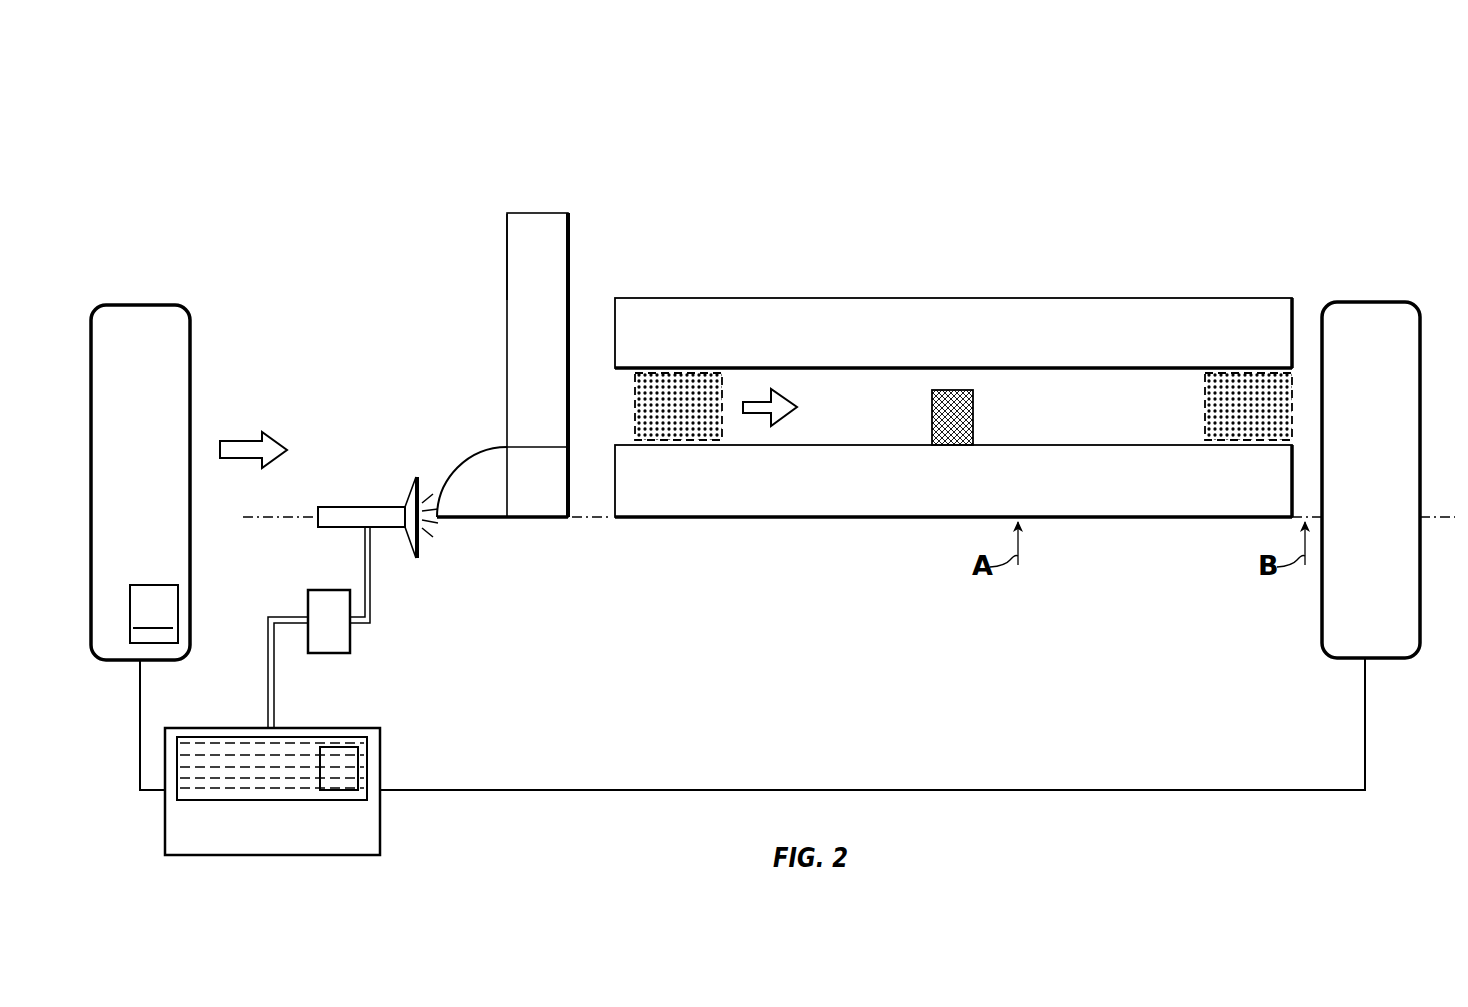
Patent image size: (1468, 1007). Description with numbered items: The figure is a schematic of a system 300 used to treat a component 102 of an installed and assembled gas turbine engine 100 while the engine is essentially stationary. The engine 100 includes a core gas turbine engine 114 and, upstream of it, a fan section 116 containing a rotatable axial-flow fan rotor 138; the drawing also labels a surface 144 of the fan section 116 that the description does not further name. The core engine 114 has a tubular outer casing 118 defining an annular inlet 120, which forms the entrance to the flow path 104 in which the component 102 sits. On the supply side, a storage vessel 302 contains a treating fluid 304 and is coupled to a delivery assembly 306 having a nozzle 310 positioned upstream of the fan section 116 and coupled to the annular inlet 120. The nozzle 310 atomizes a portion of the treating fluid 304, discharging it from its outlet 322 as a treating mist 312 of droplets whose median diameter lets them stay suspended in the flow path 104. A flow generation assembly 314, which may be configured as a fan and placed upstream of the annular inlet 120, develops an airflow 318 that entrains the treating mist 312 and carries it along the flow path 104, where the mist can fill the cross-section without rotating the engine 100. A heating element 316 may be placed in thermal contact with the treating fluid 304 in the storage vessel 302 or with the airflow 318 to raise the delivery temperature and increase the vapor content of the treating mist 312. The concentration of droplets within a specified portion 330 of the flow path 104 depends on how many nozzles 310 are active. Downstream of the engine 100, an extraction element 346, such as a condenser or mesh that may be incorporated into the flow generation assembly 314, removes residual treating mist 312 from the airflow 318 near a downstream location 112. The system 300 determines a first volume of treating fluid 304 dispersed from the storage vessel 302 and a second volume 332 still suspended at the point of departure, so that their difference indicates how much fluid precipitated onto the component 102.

The gas turbine engine 100 is at (645, 83).
The system 300 is at (178, 172).
The core gas turbine engine 114 is at (1247, 152).
The fan section 116 is at (525, 188).
The wall surface 144 is at (520, 232).
The fan rotor 138 is at (543, 505).
The annular inlet 120 is at (610, 387).
The outer casing 118 is at (942, 300).
The treating mist 312 is at (676, 398).
The airflow 318 is at (246, 446).
The delivery assembly 306 is at (343, 500).
The nozzle 310 is at (420, 497).
The outlet 322 is at (410, 520).
The heating element 316 is at (340, 640).
The flow generation assembly 314 is at (138, 315).
The extraction element 346 is at (1373, 315).
The outlet 112 is at (1435, 515).
The component 102 is at (963, 420).
The flow path 104 is at (913, 435).
The specified portion 330 is at (692, 432).
The second volume 332 is at (1243, 432).
The storage vessel 302 is at (365, 768).
The treating fluid 304 is at (292, 745).